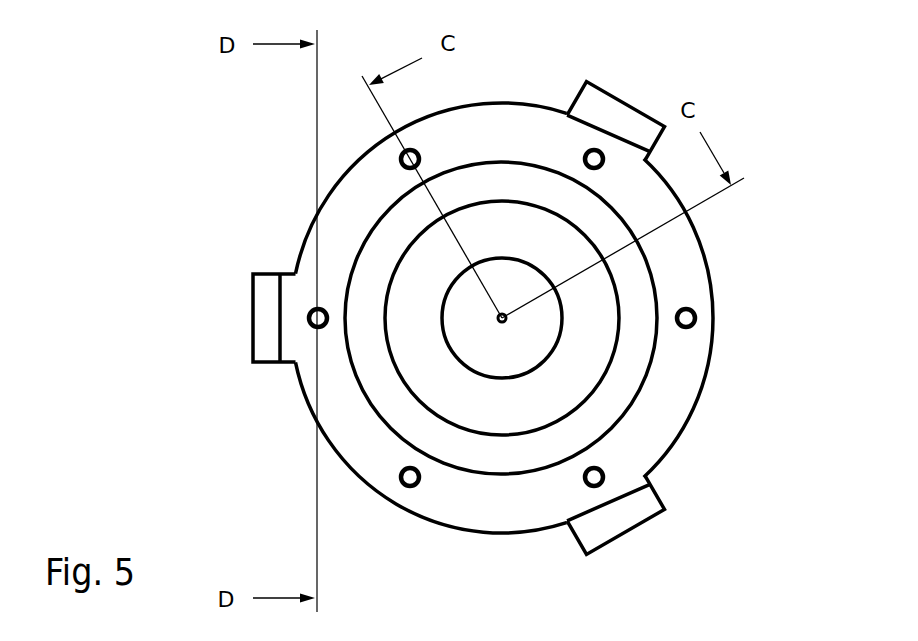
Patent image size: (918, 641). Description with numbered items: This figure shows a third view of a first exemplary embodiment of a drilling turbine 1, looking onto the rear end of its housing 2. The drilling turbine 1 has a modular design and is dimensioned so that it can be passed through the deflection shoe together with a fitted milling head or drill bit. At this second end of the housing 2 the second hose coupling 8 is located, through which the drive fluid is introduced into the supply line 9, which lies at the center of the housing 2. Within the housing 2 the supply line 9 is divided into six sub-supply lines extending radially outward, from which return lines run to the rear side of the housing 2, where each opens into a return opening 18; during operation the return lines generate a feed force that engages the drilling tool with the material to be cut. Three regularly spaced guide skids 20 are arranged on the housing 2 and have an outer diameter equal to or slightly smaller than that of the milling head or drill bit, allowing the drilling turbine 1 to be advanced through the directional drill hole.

The drilling turbine 1 is at (733, 121).
The housing 2 is at (698, 392).
The second hose coupling 8 is at (495, 434).
The supply line 9 is at (562, 302).
The return opening 18 is at (585, 146).
The guide skid 20 is at (645, 512).